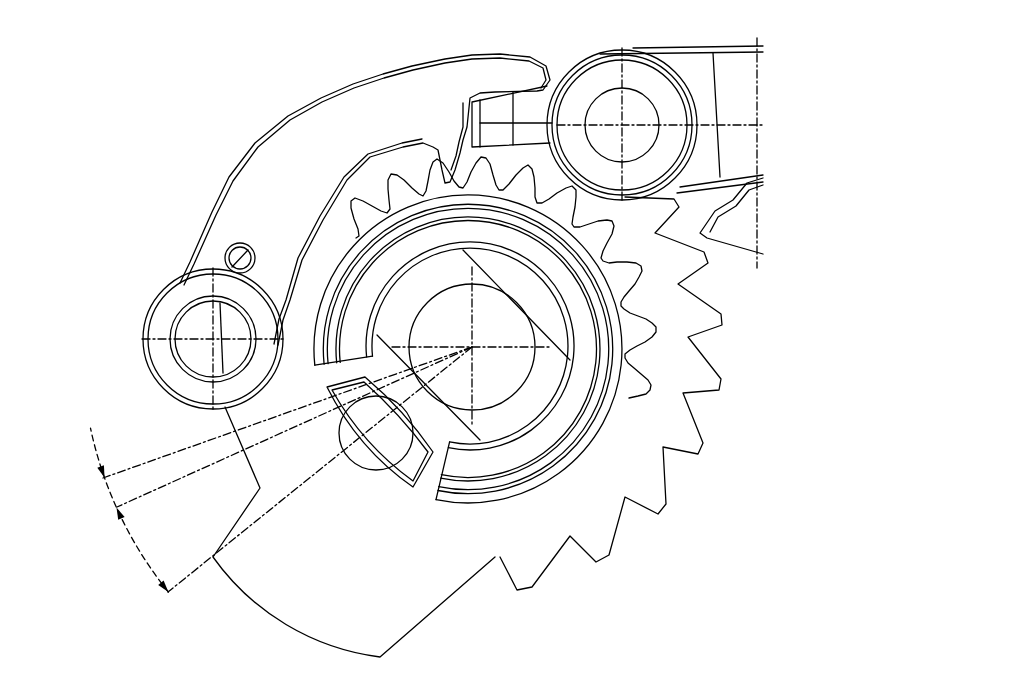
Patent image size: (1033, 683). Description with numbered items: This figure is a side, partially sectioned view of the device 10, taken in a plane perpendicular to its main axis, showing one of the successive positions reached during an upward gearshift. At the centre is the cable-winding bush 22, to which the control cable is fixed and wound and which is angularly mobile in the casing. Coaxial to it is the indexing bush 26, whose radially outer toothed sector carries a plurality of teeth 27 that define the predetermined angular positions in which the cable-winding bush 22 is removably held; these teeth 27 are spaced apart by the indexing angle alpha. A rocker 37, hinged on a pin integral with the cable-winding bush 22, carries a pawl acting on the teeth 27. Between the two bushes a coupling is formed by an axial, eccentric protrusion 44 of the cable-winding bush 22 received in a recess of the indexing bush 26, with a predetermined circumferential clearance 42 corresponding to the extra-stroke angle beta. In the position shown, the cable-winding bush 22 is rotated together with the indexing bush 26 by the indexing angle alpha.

The device 10 is at (138, 120).
The cable-winding bush 22 is at (288, 562).
The indexing bush 26 is at (580, 395).
The teeth 27 is at (627, 317).
The rocker 37 is at (250, 232).
The predetermined circumferential clearance 42 is at (410, 455).
The protrusion 44 is at (387, 477).